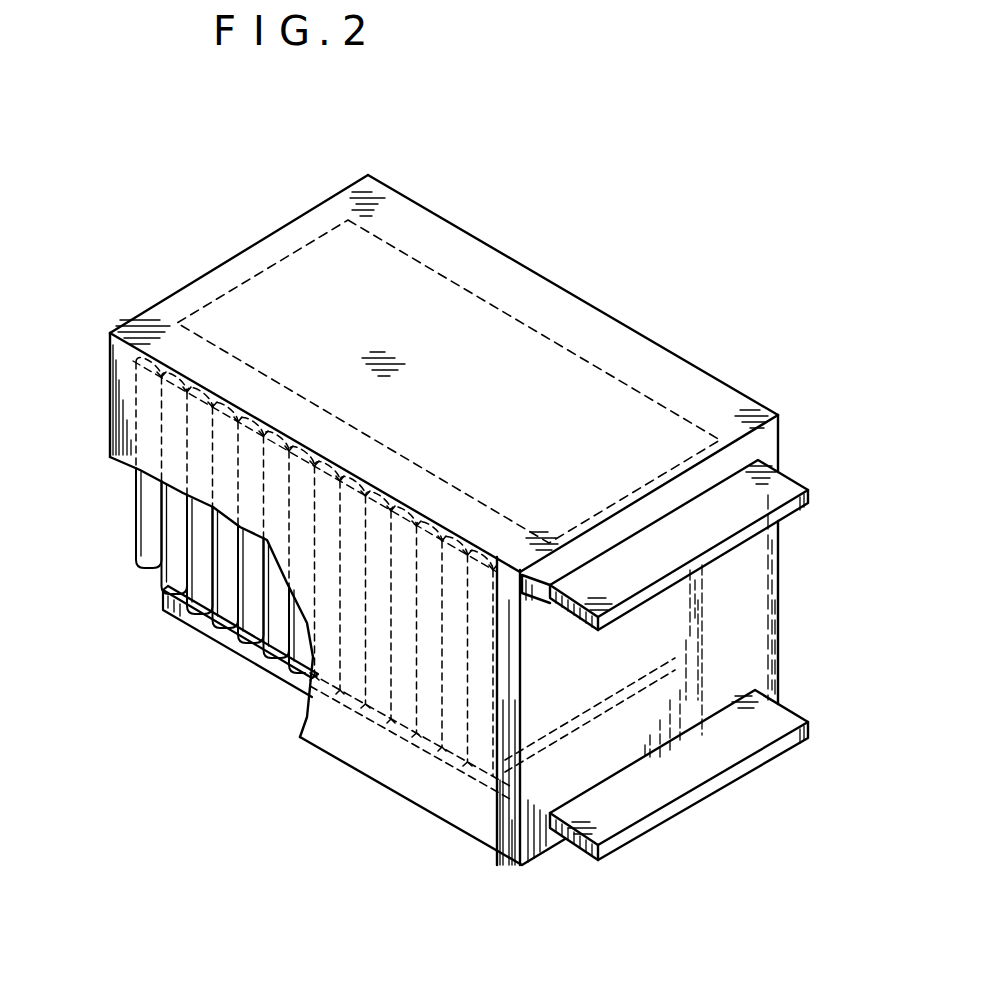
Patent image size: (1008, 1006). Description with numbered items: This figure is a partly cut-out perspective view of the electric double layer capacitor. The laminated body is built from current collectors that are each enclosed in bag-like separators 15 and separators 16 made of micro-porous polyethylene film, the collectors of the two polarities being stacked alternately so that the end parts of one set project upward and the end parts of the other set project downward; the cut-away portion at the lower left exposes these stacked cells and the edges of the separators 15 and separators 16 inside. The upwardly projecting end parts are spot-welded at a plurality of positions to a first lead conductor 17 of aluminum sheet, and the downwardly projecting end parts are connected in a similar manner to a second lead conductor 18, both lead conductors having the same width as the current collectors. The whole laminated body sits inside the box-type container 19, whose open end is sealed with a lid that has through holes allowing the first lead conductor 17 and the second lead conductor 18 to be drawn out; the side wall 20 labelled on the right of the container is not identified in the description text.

The separators 15 is at (150, 520).
The separators 16 is at (182, 570).
The first lead conductor 17 is at (778, 485).
The second lead conductor 18 is at (713, 753).
The container 19 is at (607, 332).
The side wall plate 20 is at (752, 603).